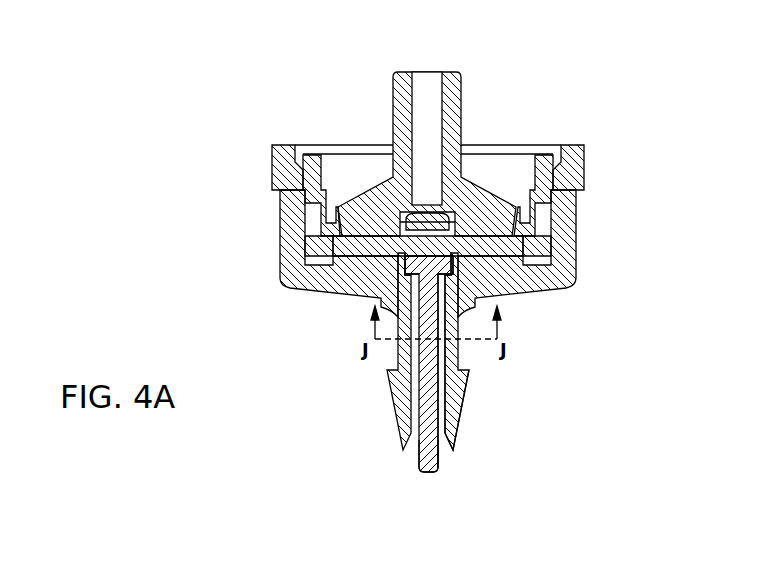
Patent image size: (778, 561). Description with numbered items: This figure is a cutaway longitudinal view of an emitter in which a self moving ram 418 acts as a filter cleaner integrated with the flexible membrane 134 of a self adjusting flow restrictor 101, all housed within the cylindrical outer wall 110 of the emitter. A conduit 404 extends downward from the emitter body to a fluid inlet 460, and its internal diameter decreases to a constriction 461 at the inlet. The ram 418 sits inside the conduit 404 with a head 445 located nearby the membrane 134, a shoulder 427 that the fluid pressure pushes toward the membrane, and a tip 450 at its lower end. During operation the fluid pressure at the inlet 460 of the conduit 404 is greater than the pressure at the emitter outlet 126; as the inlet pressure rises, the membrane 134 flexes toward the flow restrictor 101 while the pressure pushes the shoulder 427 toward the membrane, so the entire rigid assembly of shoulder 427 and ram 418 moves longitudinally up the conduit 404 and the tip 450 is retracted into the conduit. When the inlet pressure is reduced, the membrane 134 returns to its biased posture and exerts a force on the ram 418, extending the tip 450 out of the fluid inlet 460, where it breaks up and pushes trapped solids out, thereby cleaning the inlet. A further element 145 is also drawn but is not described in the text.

The emitter outlet 126 is at (432, 68).
The cylindrical outer wall 110 is at (578, 223).
The self adjusting flow restrictor 101 is at (527, 220).
The valve member 145 is at (408, 225).
The flexible membrane 134 is at (415, 243).
The shoulder 427 is at (447, 264).
The head 445 is at (436, 258).
The conduit 404 is at (460, 347).
The self moving ram 418 is at (438, 355).
The fluid inlet 460 is at (419, 448).
The constriction 461 is at (453, 452).
The tip 450 is at (430, 477).